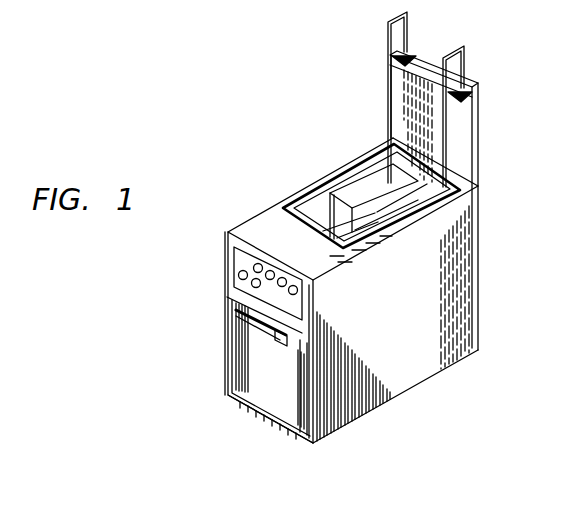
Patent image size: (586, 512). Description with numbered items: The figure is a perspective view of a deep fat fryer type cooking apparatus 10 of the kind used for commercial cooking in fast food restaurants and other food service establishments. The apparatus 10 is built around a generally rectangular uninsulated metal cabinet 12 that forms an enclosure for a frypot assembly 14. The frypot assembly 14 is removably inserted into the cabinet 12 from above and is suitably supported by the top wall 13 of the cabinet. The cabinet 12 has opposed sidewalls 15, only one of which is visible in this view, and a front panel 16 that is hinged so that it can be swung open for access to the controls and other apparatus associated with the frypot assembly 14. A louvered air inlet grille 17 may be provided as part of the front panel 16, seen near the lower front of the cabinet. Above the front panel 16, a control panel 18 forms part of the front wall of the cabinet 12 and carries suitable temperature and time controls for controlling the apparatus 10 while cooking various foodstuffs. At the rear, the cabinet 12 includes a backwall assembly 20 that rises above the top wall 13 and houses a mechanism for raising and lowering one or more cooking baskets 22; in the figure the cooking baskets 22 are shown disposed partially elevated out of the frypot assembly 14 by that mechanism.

The cooking apparatus 10 is at (257, 160).
The cabinet 12 is at (357, 418).
The top wall 13 is at (272, 238).
The frypot assembly 14 is at (316, 188).
The sidewall 15 is at (427, 366).
The front panel 16 is at (251, 356).
The louvered air inlet grille 17 is at (300, 428).
The control panel 18 is at (233, 268).
The backwall assembly 20 is at (478, 271).
The cooking basket 22 is at (358, 164).